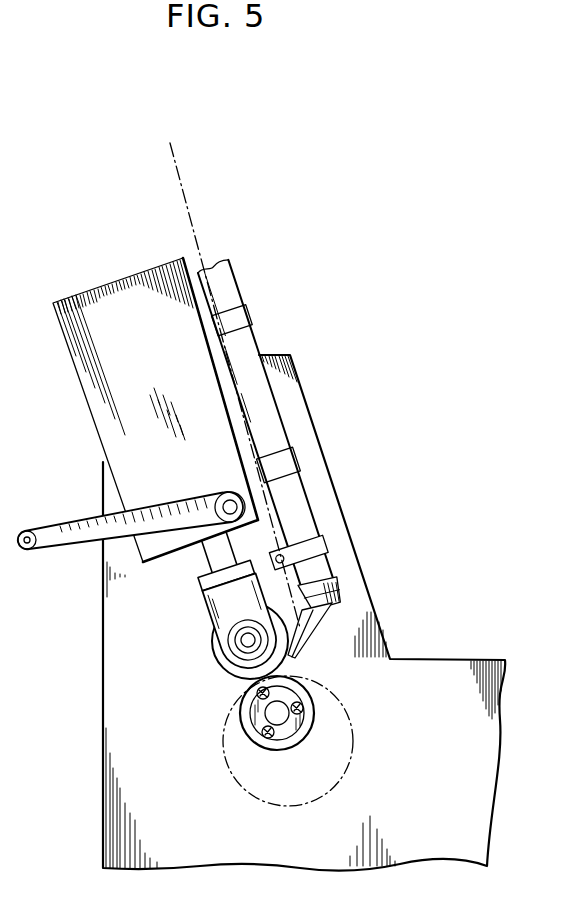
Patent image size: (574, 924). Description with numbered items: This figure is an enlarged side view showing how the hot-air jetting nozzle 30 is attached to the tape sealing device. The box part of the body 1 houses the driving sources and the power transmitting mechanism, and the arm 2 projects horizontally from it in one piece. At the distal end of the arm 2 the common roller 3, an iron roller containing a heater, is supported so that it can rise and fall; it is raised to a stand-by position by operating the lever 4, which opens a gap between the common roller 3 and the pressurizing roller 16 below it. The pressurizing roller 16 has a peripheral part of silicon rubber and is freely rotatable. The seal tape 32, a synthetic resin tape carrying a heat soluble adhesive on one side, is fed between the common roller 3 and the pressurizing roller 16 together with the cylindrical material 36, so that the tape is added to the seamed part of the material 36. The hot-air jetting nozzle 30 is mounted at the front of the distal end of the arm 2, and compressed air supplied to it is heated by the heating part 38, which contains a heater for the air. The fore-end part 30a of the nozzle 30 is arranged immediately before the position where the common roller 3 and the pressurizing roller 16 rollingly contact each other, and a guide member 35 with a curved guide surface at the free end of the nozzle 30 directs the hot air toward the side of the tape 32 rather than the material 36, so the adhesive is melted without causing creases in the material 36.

The box part of the body 1 is at (102, 698).
The arm 2 is at (118, 290).
The common roller 3 is at (217, 666).
The lever 4 is at (70, 519).
The pressurizing roller 16 is at (247, 734).
The hot-air jetting nozzle 30 is at (305, 487).
The fore-end part of the hot air jetting nozzle 30a is at (373, 644).
The seal tape 32 is at (177, 163).
The guide member 35 is at (298, 657).
The material 36 is at (355, 737).
The heating part 38 is at (272, 406).